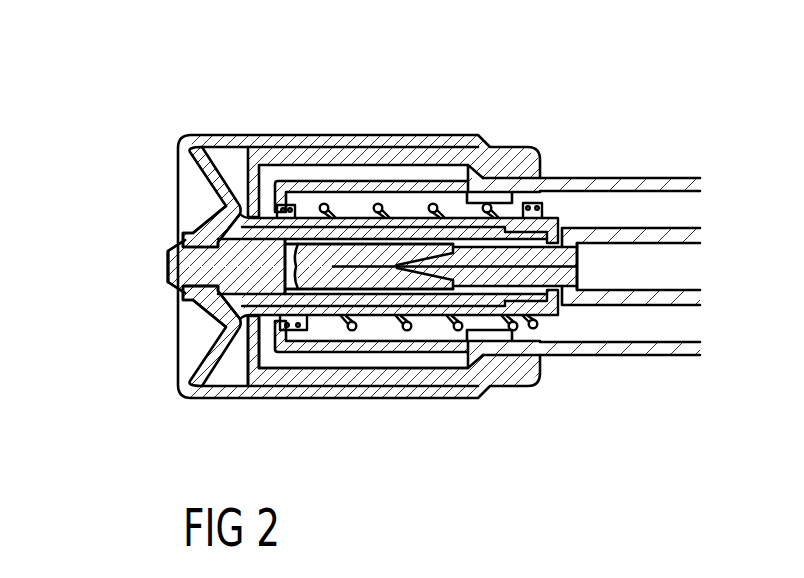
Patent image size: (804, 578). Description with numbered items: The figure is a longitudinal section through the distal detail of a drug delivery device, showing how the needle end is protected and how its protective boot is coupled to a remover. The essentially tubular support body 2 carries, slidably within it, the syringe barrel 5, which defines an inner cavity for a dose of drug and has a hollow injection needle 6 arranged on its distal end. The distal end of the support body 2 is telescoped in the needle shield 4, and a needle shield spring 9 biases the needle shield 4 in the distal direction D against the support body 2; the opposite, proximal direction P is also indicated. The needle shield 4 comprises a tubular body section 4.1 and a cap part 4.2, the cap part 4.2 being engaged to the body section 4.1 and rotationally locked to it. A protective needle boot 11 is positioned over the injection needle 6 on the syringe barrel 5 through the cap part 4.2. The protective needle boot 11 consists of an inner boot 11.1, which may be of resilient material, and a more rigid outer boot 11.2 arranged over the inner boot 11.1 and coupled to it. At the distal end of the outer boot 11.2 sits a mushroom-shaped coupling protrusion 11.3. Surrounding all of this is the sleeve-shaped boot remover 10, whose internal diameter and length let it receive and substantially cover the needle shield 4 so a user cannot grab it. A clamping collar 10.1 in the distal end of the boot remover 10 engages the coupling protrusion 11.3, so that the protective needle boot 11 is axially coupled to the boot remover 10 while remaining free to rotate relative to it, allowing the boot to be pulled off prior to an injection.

The support body 2 is at (613, 178).
The needle shield 4 is at (507, 160).
The body section 4.1 is at (309, 398).
The cap part 4.2 is at (240, 398).
The syringe barrel 5 is at (693, 300).
The injection needle 6 is at (437, 262).
The needle shield spring 9 is at (324, 203).
The boot remover 10 is at (233, 134).
The clamping collar 10.1 is at (207, 222).
The protective needle boot 11 is at (395, 282).
The inner boot 11.1 is at (395, 282).
The outer boot 11.2 is at (197, 297).
The coupling protrusion 11.3 is at (175, 252).
The distal direction D is at (147, 270).
The proximal direction P is at (656, 266).